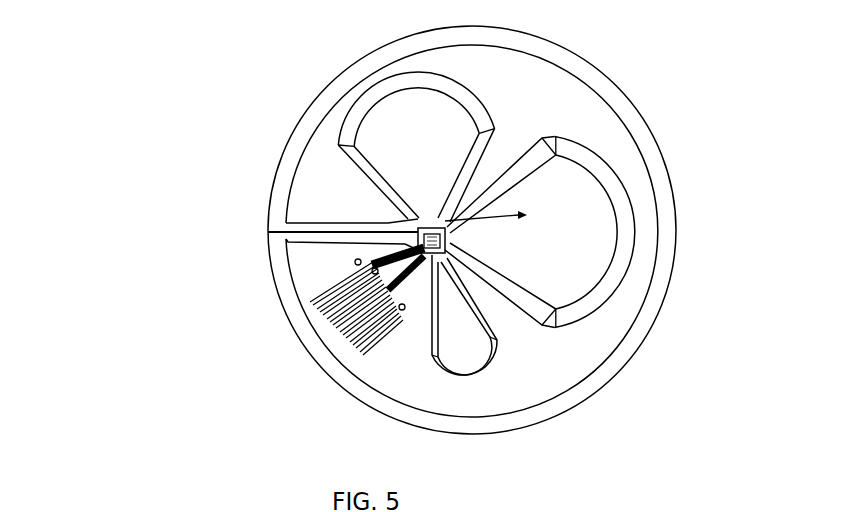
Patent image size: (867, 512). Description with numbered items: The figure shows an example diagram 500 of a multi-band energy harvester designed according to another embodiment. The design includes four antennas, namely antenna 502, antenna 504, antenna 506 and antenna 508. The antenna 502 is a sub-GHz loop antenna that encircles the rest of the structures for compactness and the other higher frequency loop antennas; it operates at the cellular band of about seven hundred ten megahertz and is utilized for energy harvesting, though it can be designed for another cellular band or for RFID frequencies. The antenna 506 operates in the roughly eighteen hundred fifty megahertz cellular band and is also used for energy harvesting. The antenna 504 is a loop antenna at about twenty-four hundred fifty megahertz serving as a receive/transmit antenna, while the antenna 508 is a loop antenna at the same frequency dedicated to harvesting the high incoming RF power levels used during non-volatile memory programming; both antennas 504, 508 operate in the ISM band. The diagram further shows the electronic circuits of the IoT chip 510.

The diagram 500 is at (675, 45).
The antenna 502 is at (290, 135).
The antenna 504 is at (397, 170).
The antenna 506 is at (418, 236).
The antenna 508 is at (449, 328).
The IoT chip 510 is at (412, 256).